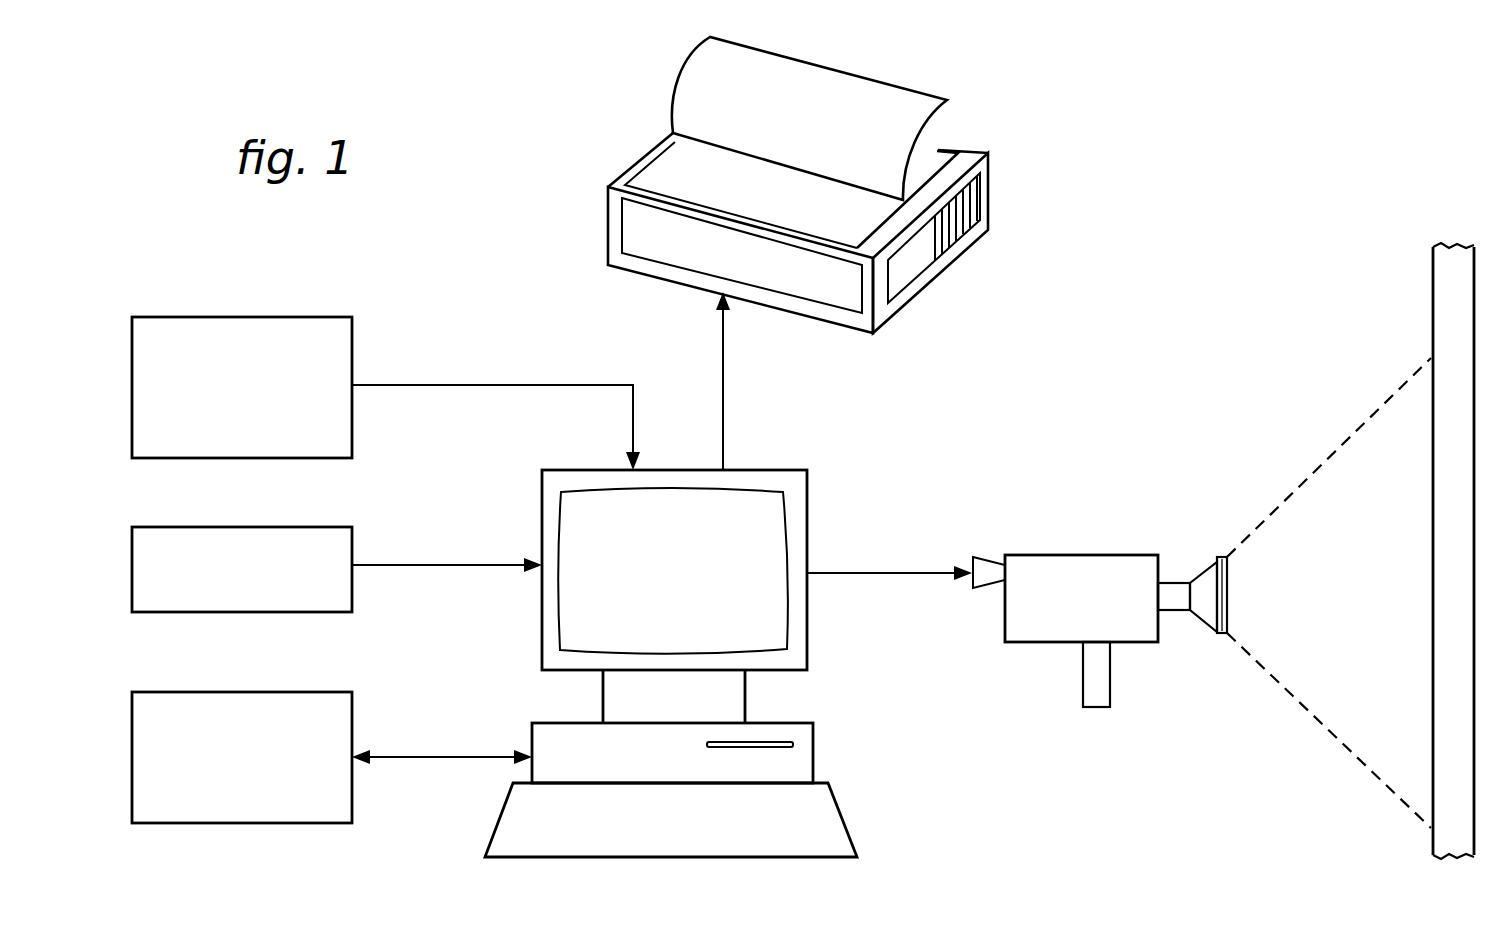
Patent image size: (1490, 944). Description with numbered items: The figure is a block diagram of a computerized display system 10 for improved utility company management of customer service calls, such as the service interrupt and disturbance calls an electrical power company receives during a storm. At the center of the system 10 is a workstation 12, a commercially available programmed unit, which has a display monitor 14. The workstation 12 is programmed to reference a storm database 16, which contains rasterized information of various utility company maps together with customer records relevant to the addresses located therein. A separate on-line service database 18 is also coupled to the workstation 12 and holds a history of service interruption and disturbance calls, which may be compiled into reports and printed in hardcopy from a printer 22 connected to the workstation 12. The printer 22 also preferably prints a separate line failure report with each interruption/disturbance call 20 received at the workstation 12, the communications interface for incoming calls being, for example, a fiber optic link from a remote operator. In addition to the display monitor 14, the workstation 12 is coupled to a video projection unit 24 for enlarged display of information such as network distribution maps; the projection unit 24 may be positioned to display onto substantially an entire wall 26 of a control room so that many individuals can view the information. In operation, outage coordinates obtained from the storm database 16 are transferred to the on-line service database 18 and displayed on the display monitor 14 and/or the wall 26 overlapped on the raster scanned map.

The computerized display system 10 is at (995, 408).
The workstation 12 is at (828, 740).
The display monitor 14 is at (783, 607).
The storm database 16 is at (352, 552).
The on-line service database 18 is at (352, 723).
The interruption/disturbance call 20 is at (352, 358).
The printer 22 is at (943, 262).
The video projection unit 24 is at (1077, 553).
The wall 26 is at (1433, 270).